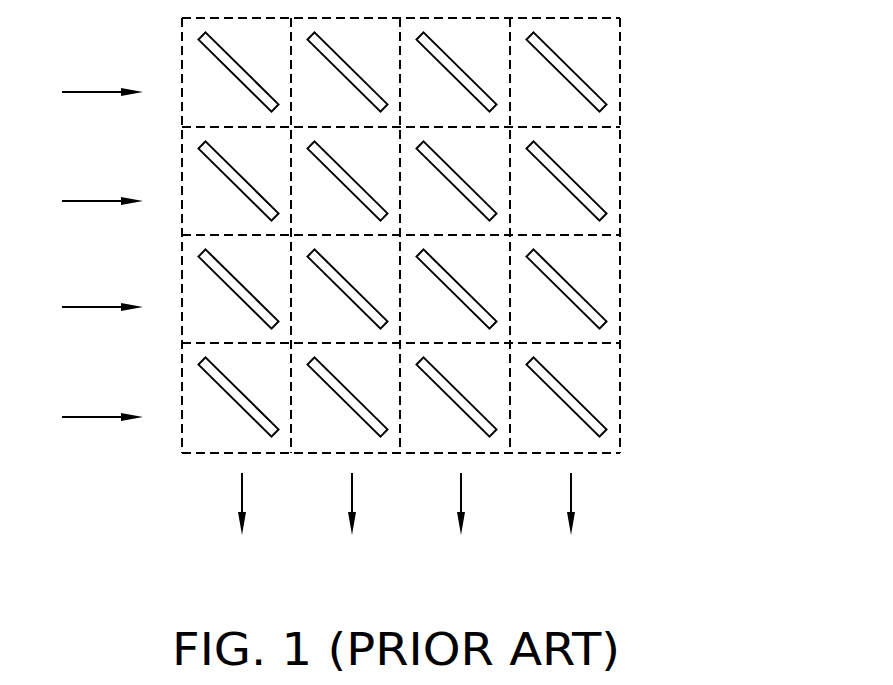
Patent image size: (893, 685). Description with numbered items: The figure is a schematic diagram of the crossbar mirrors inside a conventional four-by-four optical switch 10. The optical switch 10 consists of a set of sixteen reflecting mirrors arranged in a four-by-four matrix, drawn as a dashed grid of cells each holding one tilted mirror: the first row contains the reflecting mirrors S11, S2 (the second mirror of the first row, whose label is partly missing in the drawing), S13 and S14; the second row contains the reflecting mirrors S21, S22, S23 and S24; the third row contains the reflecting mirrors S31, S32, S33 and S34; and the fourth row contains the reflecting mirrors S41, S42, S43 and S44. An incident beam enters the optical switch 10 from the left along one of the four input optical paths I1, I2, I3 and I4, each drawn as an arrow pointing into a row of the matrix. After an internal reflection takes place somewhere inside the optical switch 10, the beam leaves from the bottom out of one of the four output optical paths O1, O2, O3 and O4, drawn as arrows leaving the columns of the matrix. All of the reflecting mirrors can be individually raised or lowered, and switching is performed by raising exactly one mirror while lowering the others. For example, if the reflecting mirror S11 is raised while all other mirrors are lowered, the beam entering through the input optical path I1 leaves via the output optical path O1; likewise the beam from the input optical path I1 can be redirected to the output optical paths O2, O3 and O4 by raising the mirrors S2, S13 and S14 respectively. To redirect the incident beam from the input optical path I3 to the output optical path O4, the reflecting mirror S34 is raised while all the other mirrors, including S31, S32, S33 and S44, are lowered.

The optical switch 10 is at (668, 71).
The reflecting mirror S11 is at (239, 77).
The reflecting mirror S2 is at (348, 77).
The reflecting mirror S13 is at (457, 77).
The reflecting mirror S14 is at (567, 77).
The reflecting mirror S21 is at (239, 186).
The reflecting mirror S22 is at (348, 186).
The reflecting mirror S23 is at (457, 186).
The reflecting mirror S24 is at (567, 186).
The reflecting mirror S31 is at (239, 294).
The reflecting mirror S32 is at (348, 294).
The reflecting mirror S33 is at (457, 294).
The reflecting mirror S34 is at (567, 294).
The reflecting mirror S41 is at (239, 402).
The reflecting mirror S42 is at (348, 402).
The reflecting mirror S43 is at (457, 402).
The reflecting mirror S44 is at (567, 402).
The input optical path I1 is at (95, 75).
The input optical path I2 is at (95, 184).
The input optical path I3 is at (95, 291).
The input optical path I4 is at (95, 400).
The output optical path O1 is at (238, 525).
The output optical path O2 is at (348, 525).
The output optical path O3 is at (457, 525).
The output optical path O4 is at (567, 525).